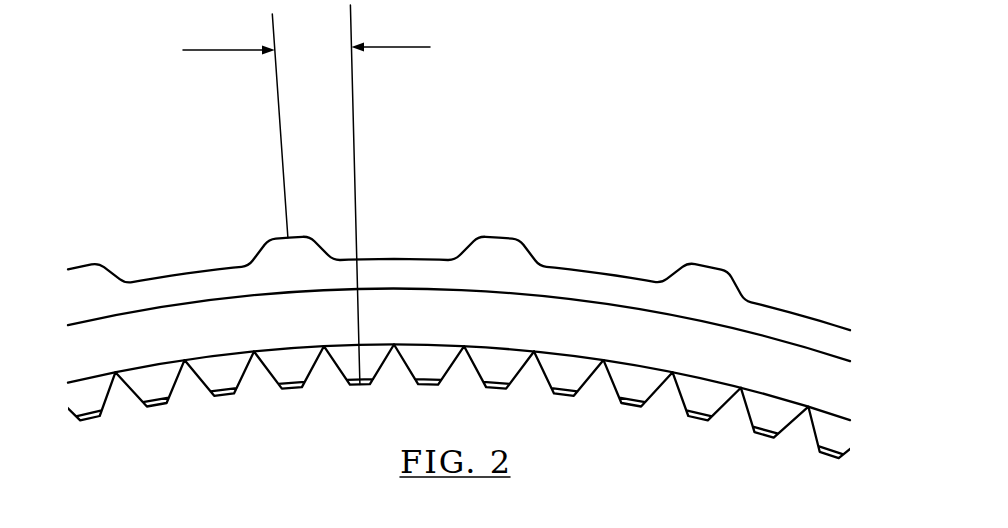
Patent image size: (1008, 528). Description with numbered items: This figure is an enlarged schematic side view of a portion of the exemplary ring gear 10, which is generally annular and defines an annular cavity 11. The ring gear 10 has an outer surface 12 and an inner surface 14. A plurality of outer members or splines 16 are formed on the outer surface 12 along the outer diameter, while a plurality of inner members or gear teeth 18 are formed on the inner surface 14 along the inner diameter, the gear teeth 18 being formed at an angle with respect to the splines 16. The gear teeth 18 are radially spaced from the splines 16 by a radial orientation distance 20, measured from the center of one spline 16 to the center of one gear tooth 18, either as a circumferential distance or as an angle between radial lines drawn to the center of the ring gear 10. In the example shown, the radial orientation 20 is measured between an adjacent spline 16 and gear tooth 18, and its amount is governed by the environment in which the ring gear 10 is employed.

The ring gear 10 is at (655, 150).
The annular cavity 11 is at (673, 374).
The outer surface 12 is at (608, 273).
The inner surface 14 is at (535, 356).
The splines 16 is at (288, 252).
The gear teeth 18 is at (158, 388).
The radial orientation distance 20 is at (430, 47).